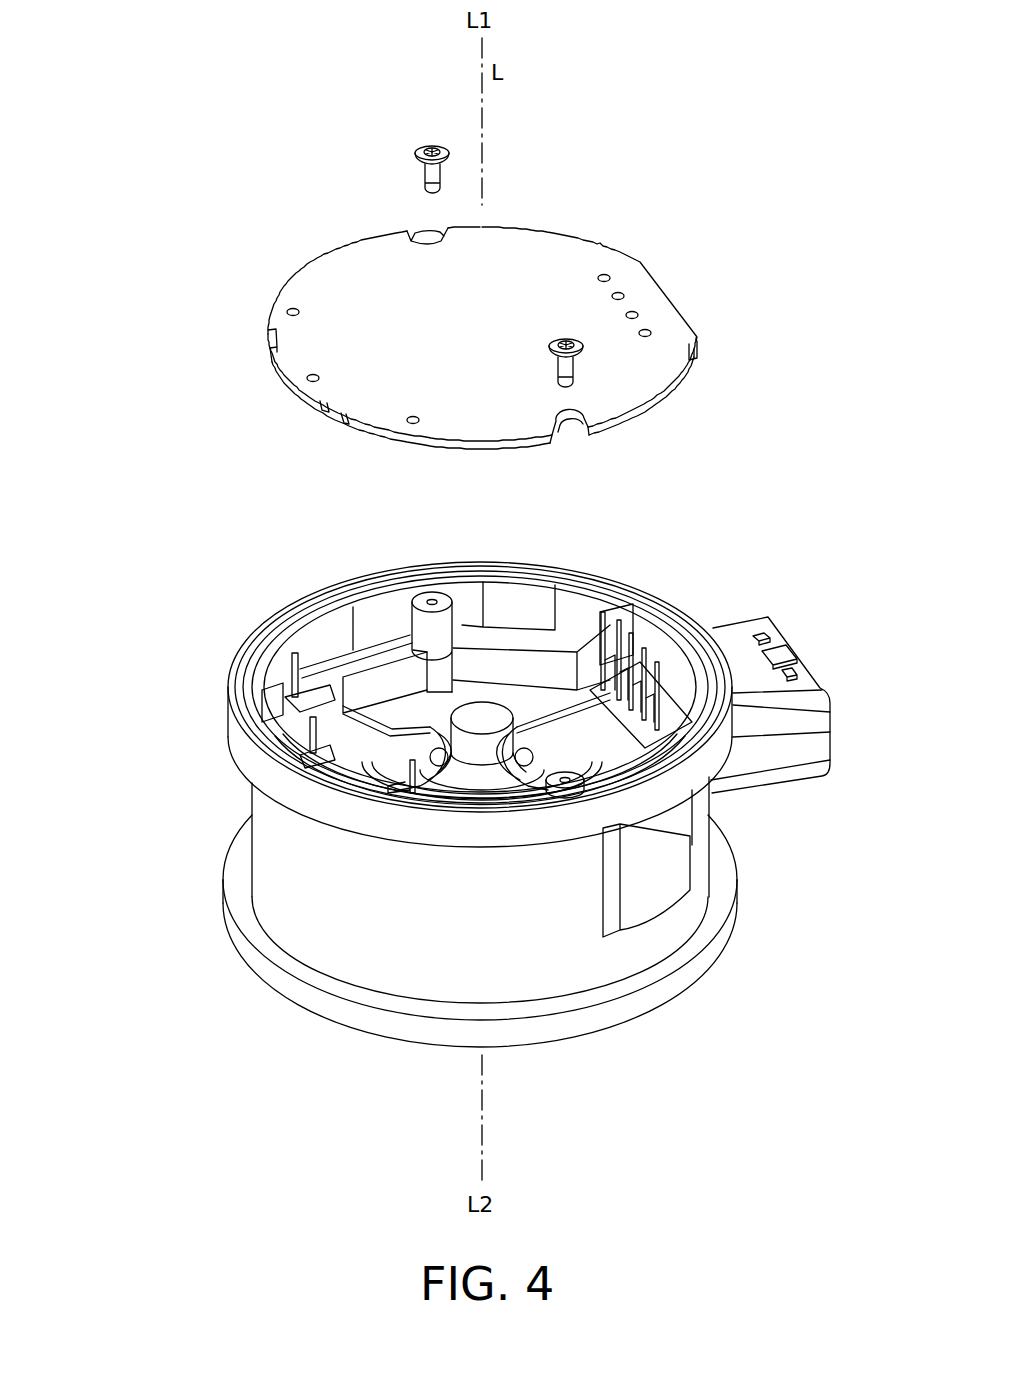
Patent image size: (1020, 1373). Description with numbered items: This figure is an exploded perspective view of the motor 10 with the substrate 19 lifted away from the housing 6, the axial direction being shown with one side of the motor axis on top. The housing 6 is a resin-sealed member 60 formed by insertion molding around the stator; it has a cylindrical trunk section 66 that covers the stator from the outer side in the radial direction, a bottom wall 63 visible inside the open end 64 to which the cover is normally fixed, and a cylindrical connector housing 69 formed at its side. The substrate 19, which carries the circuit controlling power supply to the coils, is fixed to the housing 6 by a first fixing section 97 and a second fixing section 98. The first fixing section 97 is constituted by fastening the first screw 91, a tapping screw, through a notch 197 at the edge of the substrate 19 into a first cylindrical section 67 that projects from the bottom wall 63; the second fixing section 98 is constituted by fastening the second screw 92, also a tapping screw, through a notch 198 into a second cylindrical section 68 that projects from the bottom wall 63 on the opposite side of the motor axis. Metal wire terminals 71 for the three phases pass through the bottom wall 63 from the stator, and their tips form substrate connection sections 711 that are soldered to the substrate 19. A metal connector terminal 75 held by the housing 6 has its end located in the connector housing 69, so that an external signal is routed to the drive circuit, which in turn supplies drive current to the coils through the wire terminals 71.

The motor 10 is at (222, 407).
The substrate 19 is at (568, 255).
The notch 197 is at (446, 236).
The notch 198 is at (548, 434).
The first screw 91 is at (415, 152).
The second screw 92 is at (583, 358).
The first fixing section 97 is at (282, 170).
The second fixing section 98 is at (735, 412).
The first cylindrical section 67 is at (427, 590).
The second cylindrical section 68 is at (570, 757).
The bottom wall 63 is at (510, 700).
The end 64 is at (258, 667).
The trunk section 66 is at (413, 953).
The connector housing 69 is at (745, 632).
The housing 6 is at (486, 823).
The resin-sealed member 60 is at (714, 810).
The wire terminal 71 is at (259, 723).
The substrate connection section 711 is at (297, 660).
The connector terminal 75 is at (630, 660).